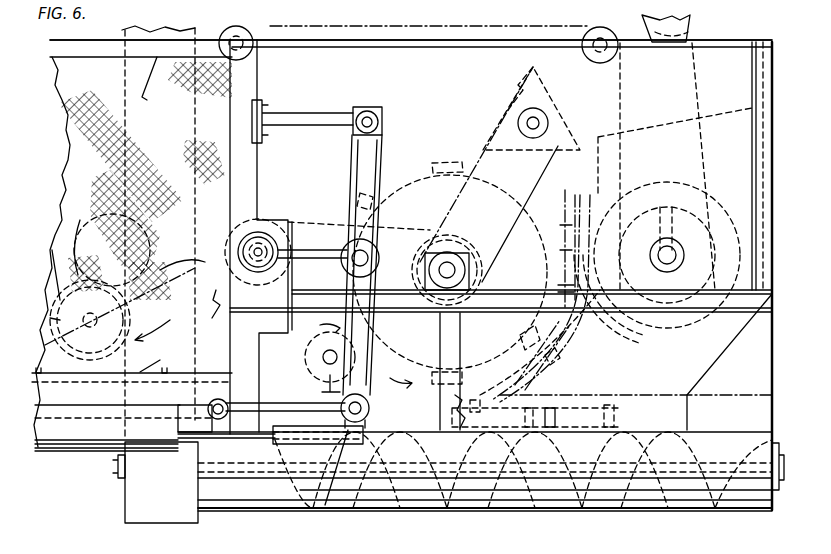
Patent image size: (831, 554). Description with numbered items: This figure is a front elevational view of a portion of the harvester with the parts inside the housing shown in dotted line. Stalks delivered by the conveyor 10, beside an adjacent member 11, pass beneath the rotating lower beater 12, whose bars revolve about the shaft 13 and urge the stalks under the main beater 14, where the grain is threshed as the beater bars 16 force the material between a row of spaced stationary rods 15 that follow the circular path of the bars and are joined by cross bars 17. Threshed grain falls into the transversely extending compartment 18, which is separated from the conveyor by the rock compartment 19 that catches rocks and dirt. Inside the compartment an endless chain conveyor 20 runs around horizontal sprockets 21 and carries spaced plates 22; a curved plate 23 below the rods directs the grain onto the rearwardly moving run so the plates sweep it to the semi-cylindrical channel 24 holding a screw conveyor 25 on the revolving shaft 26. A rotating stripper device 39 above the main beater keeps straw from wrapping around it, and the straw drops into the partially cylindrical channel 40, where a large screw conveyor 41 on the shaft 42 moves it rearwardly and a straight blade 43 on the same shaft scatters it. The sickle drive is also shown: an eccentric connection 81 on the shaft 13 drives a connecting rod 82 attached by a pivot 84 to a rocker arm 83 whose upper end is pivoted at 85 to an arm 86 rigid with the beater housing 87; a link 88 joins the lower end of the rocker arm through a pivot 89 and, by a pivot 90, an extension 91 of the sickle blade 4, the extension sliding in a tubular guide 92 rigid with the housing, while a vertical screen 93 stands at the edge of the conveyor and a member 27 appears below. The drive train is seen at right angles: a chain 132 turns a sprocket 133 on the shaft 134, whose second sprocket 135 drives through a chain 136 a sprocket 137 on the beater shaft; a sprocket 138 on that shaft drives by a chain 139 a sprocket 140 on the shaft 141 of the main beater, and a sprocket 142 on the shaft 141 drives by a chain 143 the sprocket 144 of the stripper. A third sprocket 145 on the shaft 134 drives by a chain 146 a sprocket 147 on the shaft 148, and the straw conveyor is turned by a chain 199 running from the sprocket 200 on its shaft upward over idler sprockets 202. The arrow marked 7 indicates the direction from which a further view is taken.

The sickle blade 4 is at (100, 446).
The section line 7 is at (783, 372).
The conveyor 10 is at (140, 372).
The frame post 11 is at (168, 371).
The lower beater 12 is at (217, 315).
The shaft 13 is at (262, 247).
The second beater 14 is at (419, 163).
The stationary rods 15 is at (494, 395).
The beater bars 16 is at (545, 215).
The cross bars 17 is at (572, 307).
The compartment 18 is at (470, 432).
The rock compartment 19 is at (338, 468).
The endless chain conveyor 20 is at (565, 420).
The sprockets 21 is at (555, 410).
The plates 22 is at (470, 398).
The curved plate 23 is at (590, 338).
The channel 24 is at (632, 512).
The screw conveyor 25 is at (583, 497).
The revolving shaft 26 is at (500, 487).
The motor 27 is at (125, 510).
The stripper device 39 is at (548, 85).
The channel 40 is at (706, 320).
The screw conveyor 41 is at (740, 222).
The shaft 42 is at (670, 246).
The blade 43 is at (674, 190).
The eccentric connection 81 is at (267, 277).
The connecting rod 82 is at (318, 262).
The rocker arm 83 is at (383, 224).
The pivot 84 is at (366, 257).
The pivot 85 is at (368, 111).
The arm 86 is at (323, 112).
The beater housing 87 is at (480, 42).
The link 88 is at (300, 362).
The pivot 89 is at (370, 409).
The pivot 90 is at (222, 395).
The extension 91 is at (220, 440).
The tubular guide 92 is at (310, 446).
The vertical screen 93 is at (194, 107).
The chain 132 is at (76, 345).
The sprocket 133 is at (52, 318).
The shaft 134 is at (110, 328).
The second sprocket 135 is at (52, 263).
The chain 136 is at (175, 258).
The sprocket 137 is at (200, 252).
The sprocket 138 is at (238, 215).
The chain 139 is at (319, 222).
The sprocket 140 is at (433, 242).
The shaft 141 is at (450, 270).
The sprocket 142 is at (470, 248).
The chain 143 is at (543, 180).
The sprocket 144 is at (520, 152).
The third sprocket 145 is at (88, 230).
The chain 146 is at (132, 302).
The sprocket 147 is at (118, 210).
The shaft 148 is at (125, 248).
The chain 199 is at (708, 80).
The sprocket 200 is at (640, 215).
The idler sprockets 202 is at (287, 21).